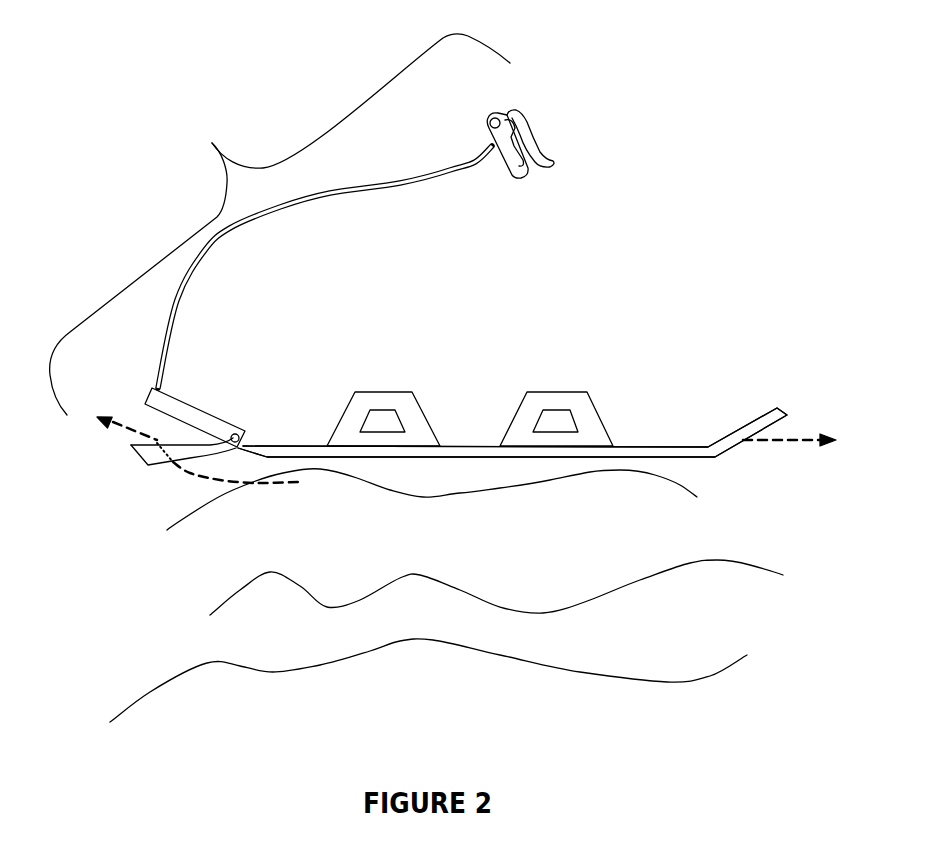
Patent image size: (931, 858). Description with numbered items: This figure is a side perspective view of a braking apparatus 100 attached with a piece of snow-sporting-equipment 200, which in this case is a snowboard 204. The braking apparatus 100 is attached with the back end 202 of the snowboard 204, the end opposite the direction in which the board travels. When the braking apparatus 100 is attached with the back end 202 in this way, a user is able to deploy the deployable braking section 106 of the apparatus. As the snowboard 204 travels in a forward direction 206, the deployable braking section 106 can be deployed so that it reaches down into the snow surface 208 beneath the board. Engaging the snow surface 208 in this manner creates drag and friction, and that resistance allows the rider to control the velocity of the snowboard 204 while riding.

The braking apparatus 100 is at (302, 224).
The deployable braking section 106 is at (145, 472).
The snow-sporting-equipment 200 is at (683, 434).
The snowboard 204 is at (512, 432).
The back end 202 is at (268, 433).
The forward direction 206 is at (803, 442).
The snow surface 208 is at (476, 506).